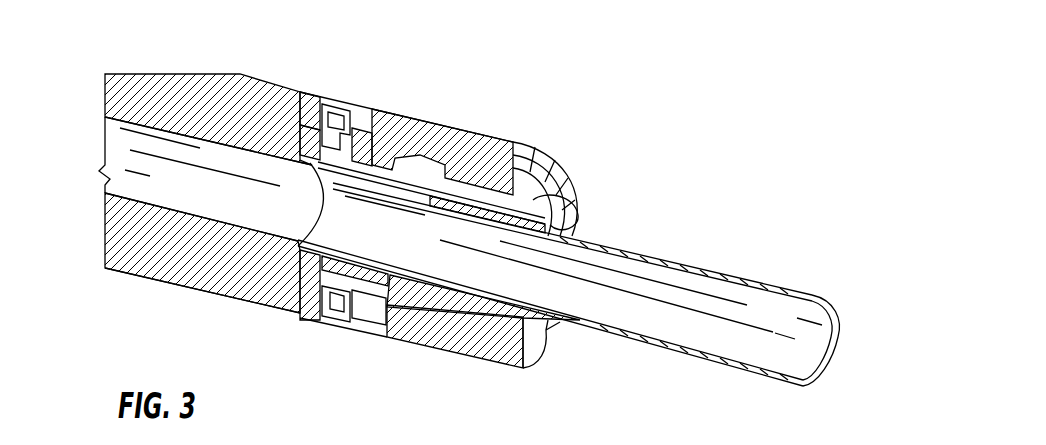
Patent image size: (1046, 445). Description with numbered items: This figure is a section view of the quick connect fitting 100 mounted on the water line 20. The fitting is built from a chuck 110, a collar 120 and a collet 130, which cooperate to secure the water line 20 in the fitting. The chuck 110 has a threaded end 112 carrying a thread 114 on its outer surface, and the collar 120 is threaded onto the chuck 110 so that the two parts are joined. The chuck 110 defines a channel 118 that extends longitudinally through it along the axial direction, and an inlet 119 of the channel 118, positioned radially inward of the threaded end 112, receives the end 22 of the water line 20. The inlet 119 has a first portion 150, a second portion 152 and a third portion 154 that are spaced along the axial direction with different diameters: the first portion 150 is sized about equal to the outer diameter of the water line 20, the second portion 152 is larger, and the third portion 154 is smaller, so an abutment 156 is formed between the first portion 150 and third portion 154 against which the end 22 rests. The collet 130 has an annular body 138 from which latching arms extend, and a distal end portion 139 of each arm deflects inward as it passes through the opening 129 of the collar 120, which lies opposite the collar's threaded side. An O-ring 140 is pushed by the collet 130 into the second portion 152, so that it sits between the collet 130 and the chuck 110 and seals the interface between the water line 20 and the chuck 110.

The quick connect fitting 100 is at (630, 163).
The water line 20 is at (727, 271).
The end 22 is at (308, 210).
The chuck 110 is at (170, 273).
The threaded end 112 is at (306, 300).
The thread 114 is at (361, 158).
The channel 118 is at (143, 155).
The inlet 119 is at (280, 306).
The collar 120 is at (462, 345).
The opening 129 is at (507, 330).
The collet 130 is at (425, 190).
The annular body 138 is at (586, 230).
The distal end portion 139 is at (568, 337).
The O-ring 140 is at (333, 265).
The first portion 150 is at (316, 156).
The second portion 152 is at (371, 160).
The third portion 154 is at (219, 145).
The abutment 156 is at (332, 205).